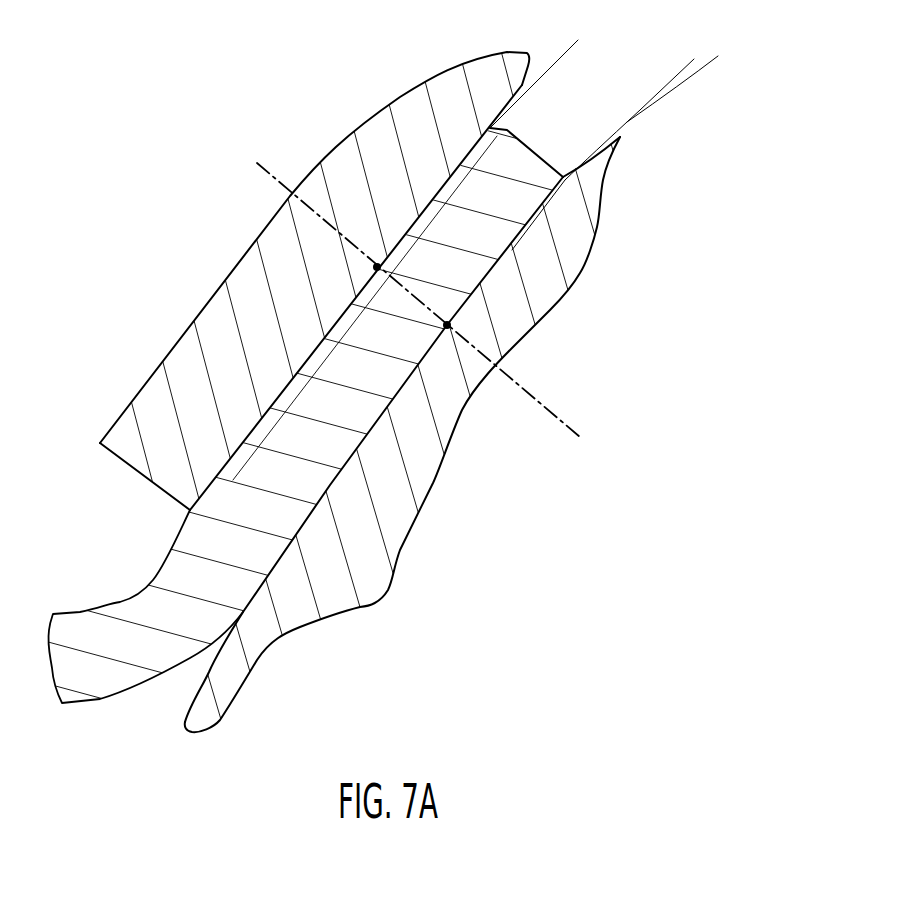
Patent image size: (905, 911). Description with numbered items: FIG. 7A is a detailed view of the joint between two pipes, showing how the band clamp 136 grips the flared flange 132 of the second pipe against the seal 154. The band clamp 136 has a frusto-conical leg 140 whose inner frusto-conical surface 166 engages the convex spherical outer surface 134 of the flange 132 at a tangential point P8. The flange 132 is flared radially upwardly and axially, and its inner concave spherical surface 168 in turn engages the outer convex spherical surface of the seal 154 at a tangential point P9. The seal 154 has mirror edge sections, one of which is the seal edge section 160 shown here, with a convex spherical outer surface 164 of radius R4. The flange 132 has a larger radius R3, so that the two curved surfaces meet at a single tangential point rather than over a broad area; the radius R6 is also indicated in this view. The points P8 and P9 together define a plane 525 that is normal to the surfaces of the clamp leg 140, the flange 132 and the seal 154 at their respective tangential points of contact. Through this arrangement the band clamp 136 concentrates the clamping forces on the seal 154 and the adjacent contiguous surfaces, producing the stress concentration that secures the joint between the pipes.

The frusto-conical leg 140 is at (352, 286).
The band clamp 136 is at (383, 94).
The convex spherical outer surface 134 is at (222, 480).
The inner frusto-conical surface 166 is at (192, 503).
The flange 132 is at (522, 165).
The seal 154 is at (438, 435).
The seal edge section 160 is at (550, 299).
The convex spherical outer surface 164 is at (310, 516).
The inner concave spherical surface 168 is at (535, 197).
The plane 525 is at (267, 170).
The tangential point P8 is at (377, 263).
The tangential point P9 is at (452, 326).
The radius R3 is at (642, 109).
The radius R4 is at (689, 82).
The radius R6 is at (572, 51).